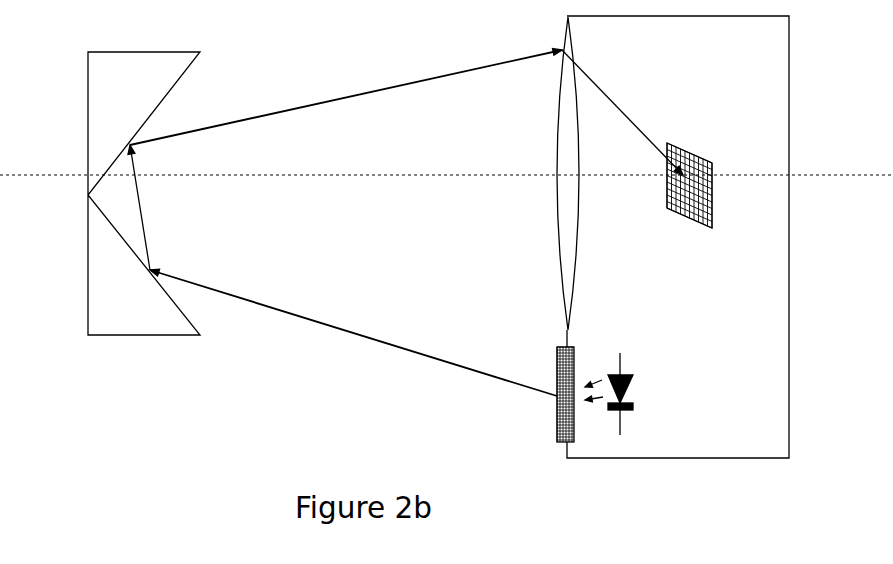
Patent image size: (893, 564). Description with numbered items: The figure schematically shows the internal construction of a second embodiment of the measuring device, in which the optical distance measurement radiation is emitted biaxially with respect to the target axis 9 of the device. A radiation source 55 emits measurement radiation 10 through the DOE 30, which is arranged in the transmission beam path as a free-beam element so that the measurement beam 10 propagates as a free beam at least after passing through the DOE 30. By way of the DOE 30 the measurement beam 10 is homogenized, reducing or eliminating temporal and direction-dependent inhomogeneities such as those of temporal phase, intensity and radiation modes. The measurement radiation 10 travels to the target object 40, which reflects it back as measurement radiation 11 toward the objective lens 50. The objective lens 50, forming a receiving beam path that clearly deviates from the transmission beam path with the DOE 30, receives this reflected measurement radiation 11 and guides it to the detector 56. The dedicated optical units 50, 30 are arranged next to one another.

The target axis 9 is at (293, 176).
The measurement radiation 10 is at (325, 324).
The measurement radiation reflected back 11 is at (277, 108).
The DOE 30 is at (557, 415).
The target object 40 is at (181, 52).
The objective lens 50 is at (560, 147).
The radiation source 55 is at (633, 375).
The detector 56 is at (676, 150).